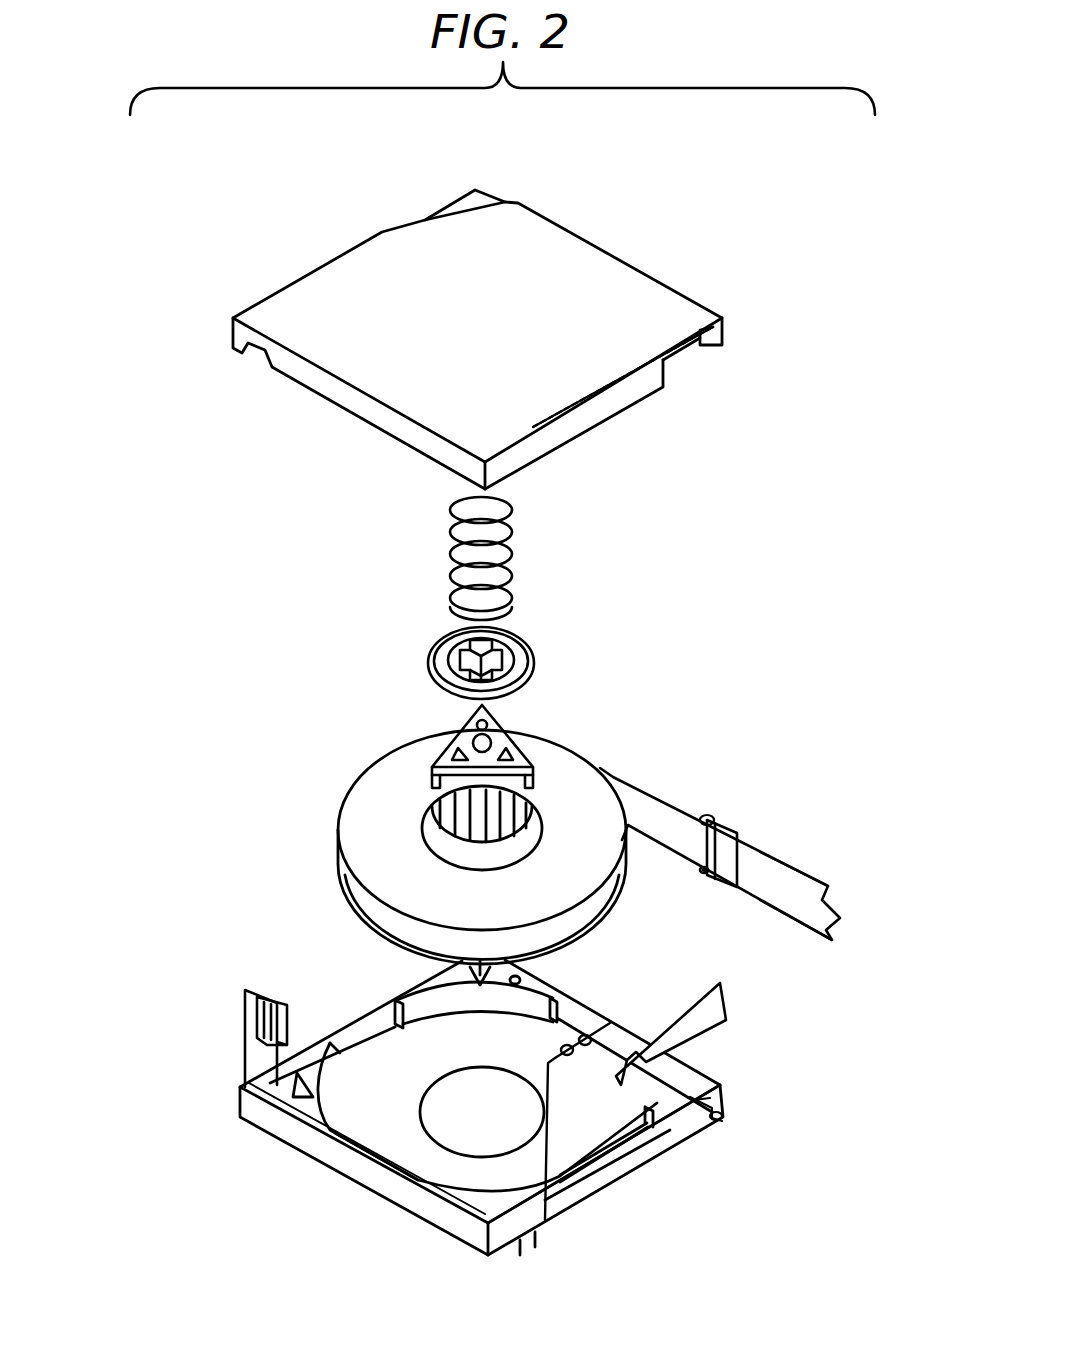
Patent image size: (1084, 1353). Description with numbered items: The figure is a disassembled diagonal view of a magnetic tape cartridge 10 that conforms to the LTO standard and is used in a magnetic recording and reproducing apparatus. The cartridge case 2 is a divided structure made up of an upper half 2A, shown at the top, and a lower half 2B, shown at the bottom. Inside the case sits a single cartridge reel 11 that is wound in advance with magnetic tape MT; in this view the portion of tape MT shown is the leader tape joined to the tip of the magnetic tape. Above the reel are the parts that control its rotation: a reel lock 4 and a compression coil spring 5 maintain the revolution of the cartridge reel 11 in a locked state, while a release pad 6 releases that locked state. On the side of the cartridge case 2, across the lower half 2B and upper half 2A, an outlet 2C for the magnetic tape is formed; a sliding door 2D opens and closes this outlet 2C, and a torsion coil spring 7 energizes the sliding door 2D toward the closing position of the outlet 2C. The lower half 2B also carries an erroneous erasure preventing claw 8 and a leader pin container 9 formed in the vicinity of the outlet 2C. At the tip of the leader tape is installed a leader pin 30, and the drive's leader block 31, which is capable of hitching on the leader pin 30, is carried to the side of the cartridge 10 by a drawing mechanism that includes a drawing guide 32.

The magnetic tape cartridge 10 is at (566, 196).
The cartridge case 2 is at (213, 618).
The upper half 2A is at (322, 418).
The lower half 2B is at (347, 1006).
The outlet of magnetic tape 2C is at (667, 365).
The sliding door 2D is at (655, 1015).
The reel lock 4 is at (528, 625).
The compression coil spring 5 is at (510, 560).
The release pad 6 is at (524, 710).
The torsion coil spring 7 is at (610, 1023).
The erroneous erasure preventing claw 8 is at (273, 1000).
The leader pin container 9 is at (720, 1120).
The cartridge reel 11 is at (563, 768).
The magnetic tape MT is at (633, 787).
The leader pin 30 is at (710, 817).
The leader block 31 is at (727, 877).
The drawing guide 32 is at (800, 887).